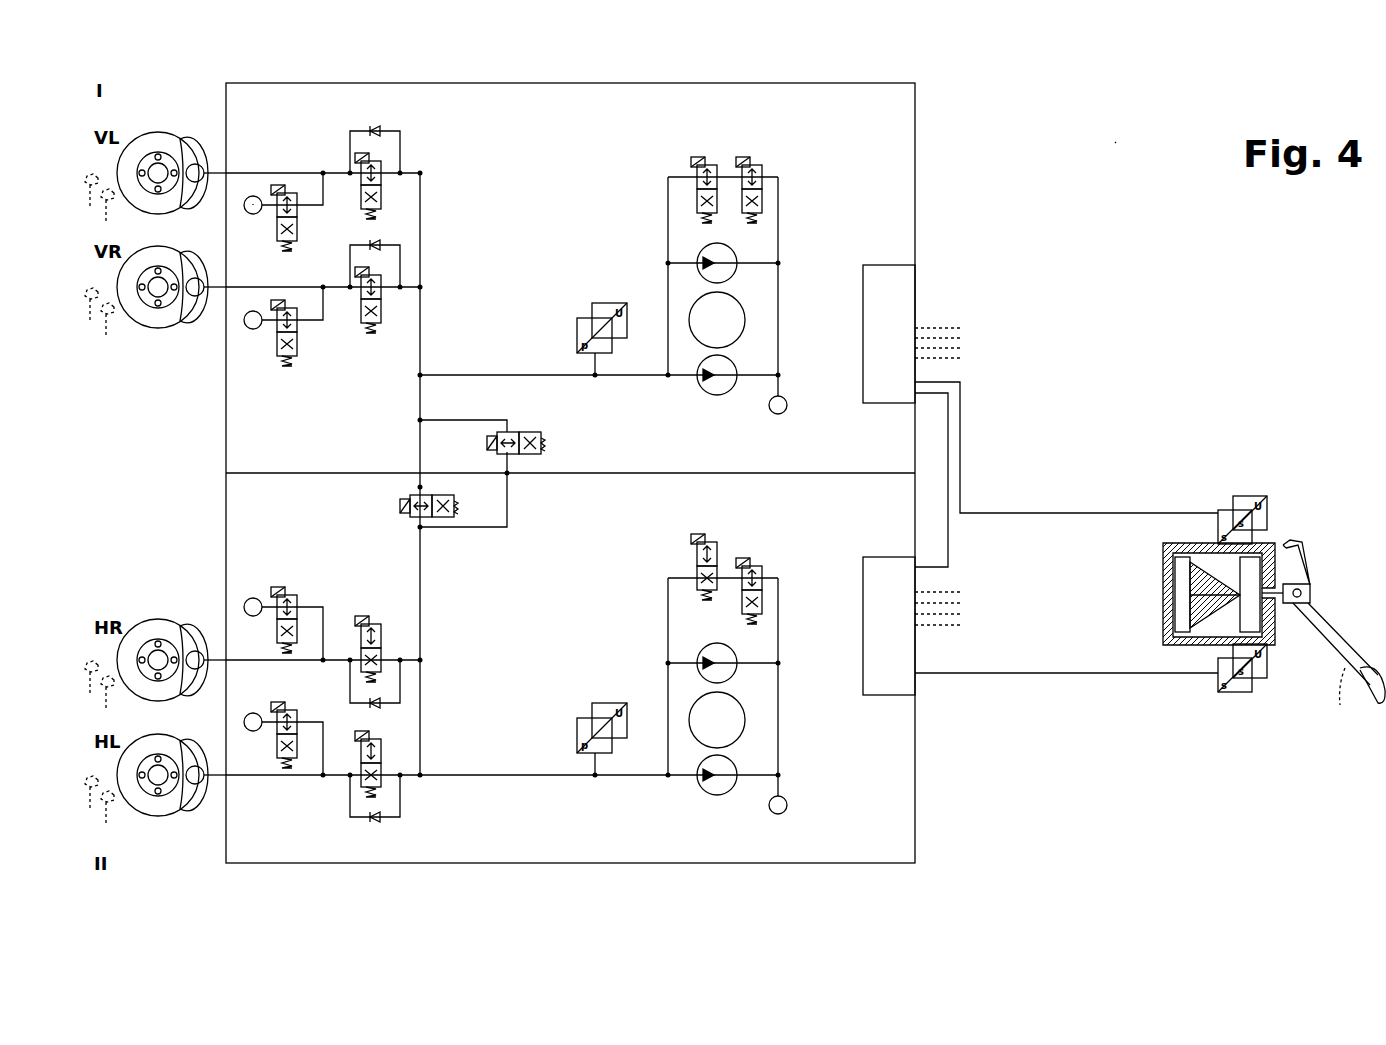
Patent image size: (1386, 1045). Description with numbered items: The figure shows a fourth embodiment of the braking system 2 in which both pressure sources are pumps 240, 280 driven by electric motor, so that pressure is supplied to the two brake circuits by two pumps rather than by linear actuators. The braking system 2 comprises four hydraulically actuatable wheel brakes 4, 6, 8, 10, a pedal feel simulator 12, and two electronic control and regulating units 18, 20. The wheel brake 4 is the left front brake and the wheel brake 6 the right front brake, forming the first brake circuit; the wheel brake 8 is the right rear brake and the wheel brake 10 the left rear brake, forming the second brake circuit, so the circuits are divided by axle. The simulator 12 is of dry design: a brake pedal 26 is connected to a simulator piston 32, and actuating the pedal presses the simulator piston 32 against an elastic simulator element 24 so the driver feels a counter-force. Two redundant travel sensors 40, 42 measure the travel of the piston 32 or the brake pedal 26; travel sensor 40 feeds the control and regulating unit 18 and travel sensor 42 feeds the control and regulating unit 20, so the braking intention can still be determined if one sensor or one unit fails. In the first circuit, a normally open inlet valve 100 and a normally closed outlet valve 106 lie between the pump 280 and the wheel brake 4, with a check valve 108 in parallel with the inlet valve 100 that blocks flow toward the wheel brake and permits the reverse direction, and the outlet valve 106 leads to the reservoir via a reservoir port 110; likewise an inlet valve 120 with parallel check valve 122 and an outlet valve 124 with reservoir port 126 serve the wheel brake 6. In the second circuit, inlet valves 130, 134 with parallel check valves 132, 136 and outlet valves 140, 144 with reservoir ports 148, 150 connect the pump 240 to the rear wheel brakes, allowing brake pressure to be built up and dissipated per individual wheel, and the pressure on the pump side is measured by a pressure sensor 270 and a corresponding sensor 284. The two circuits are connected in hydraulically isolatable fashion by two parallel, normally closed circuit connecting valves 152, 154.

The braking system 2 is at (1115, 143).
The wheel brake 4 is at (192, 145).
The wheel brake 6 is at (192, 320).
The wheel brake 8 is at (192, 633).
The wheel brake 10 is at (190, 805).
The pedal feel simulator 12 is at (1152, 572).
The electronic control and regulating unit 18 is at (905, 318).
The electronic control and regulating unit 20 is at (905, 688).
The simulator element 24 is at (1210, 568).
The brake pedal 26 is at (1342, 690).
The simulator piston 32 is at (1253, 565).
The travel sensor 40 is at (1252, 495).
The travel sensor 42 is at (1257, 694).
The inlet valve 100 is at (383, 188).
The outlet valve 106 is at (290, 190).
The check valve 108 is at (373, 124).
The reservoir port 110 is at (253, 196).
The inlet valve 120 is at (383, 302).
The check valve 122 is at (402, 240).
The outlet valve 124 is at (292, 352).
The reservoir port 126 is at (253, 329).
The inlet valve 130 is at (383, 650).
The check valve 132 is at (402, 700).
The inlet valve 134 is at (383, 768).
The check valve 136 is at (373, 823).
The outlet valve 140 is at (296, 595).
The outlet valve 144 is at (291, 768).
The reservoir port 148 is at (254, 598).
The reservoir port 150 is at (254, 731).
The circuit connecting valve 152 is at (414, 522).
The circuit connecting valve 154 is at (542, 437).
The pump 240 is at (720, 803).
The pressure sensor 270 is at (600, 702).
The pump 280 is at (722, 142).
The pressure sensor 284 is at (600, 302).